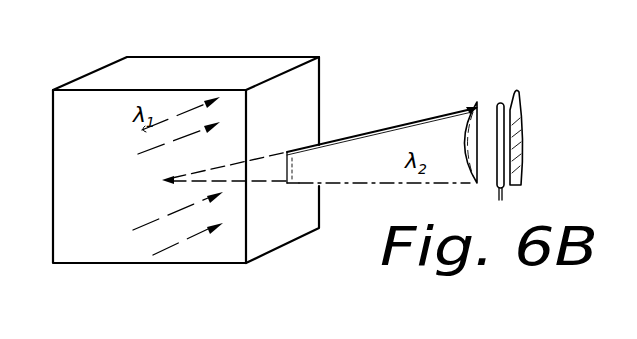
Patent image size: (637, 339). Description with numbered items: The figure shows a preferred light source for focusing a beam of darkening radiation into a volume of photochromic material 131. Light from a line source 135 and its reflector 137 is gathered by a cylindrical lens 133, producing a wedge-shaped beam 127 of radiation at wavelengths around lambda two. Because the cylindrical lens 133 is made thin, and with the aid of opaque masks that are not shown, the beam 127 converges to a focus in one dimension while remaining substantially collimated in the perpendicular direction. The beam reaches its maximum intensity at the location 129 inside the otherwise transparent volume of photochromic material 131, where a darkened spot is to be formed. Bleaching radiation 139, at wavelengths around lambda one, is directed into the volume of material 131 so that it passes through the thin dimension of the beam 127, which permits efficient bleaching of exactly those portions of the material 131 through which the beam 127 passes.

The wedge-shaped beam 127 is at (386, 130).
The location of maximum intensity 129 is at (160, 181).
The volume of photochromic material 131 is at (310, 78).
The cylindrical lens 133 is at (480, 100).
The line source 135 is at (503, 103).
The reflector 137 is at (527, 125).
The bleaching radiation 139 is at (150, 143).